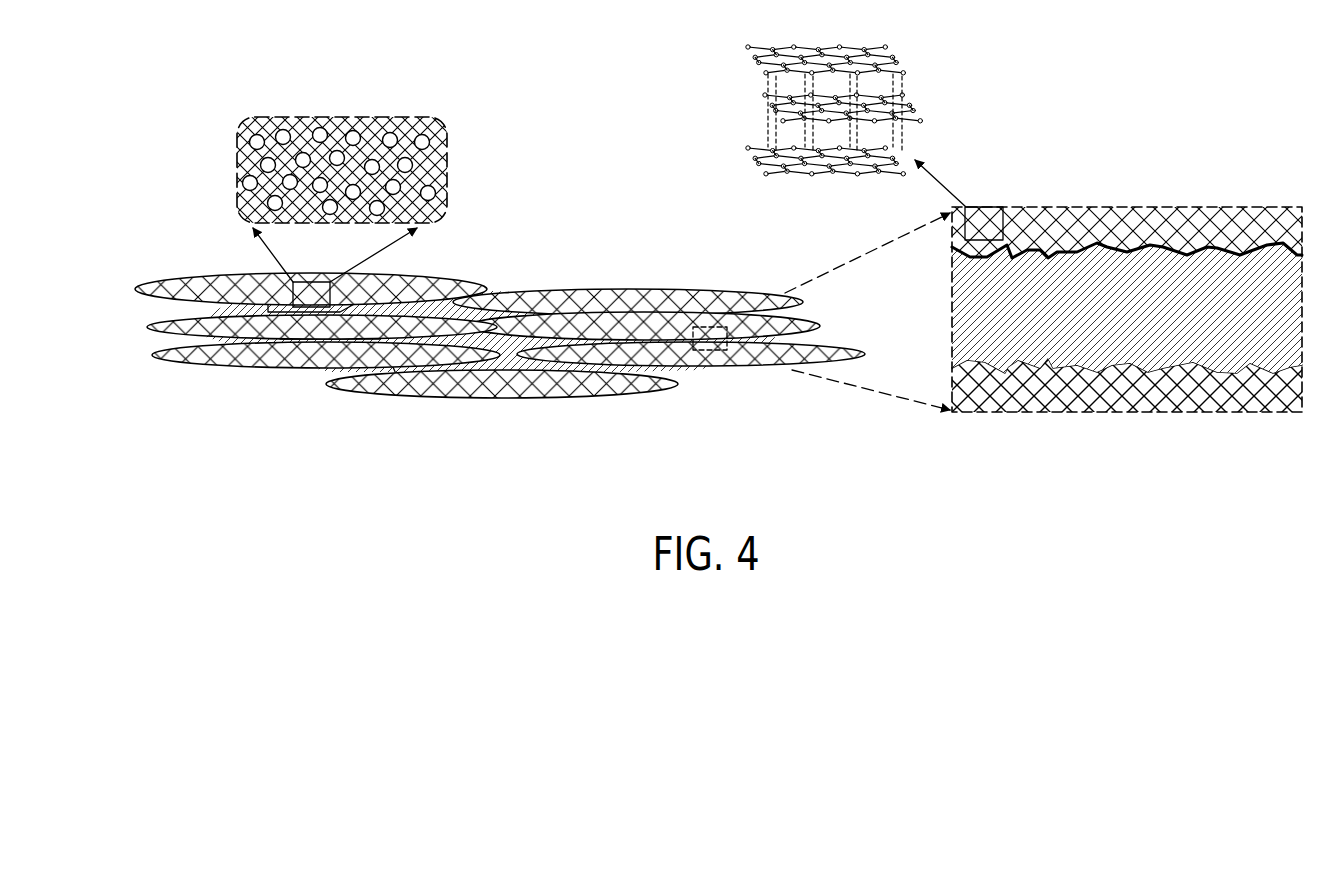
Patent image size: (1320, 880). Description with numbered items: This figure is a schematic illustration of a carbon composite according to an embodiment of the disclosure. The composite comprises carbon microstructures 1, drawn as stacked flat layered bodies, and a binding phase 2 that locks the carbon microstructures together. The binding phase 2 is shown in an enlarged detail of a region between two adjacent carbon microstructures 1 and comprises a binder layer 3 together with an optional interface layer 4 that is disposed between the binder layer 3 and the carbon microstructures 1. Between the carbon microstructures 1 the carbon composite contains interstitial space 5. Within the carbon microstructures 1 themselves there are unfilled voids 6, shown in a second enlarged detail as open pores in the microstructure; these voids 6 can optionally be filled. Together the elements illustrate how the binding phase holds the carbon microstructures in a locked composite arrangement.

The carbon microstructures 1 is at (640, 300).
The binding phase 2 is at (457, 367).
The binder layer 3 is at (1100, 288).
The interface layer 4 is at (1158, 245).
The interstitial space 5 is at (572, 367).
The unfilled voids 6 is at (437, 145).